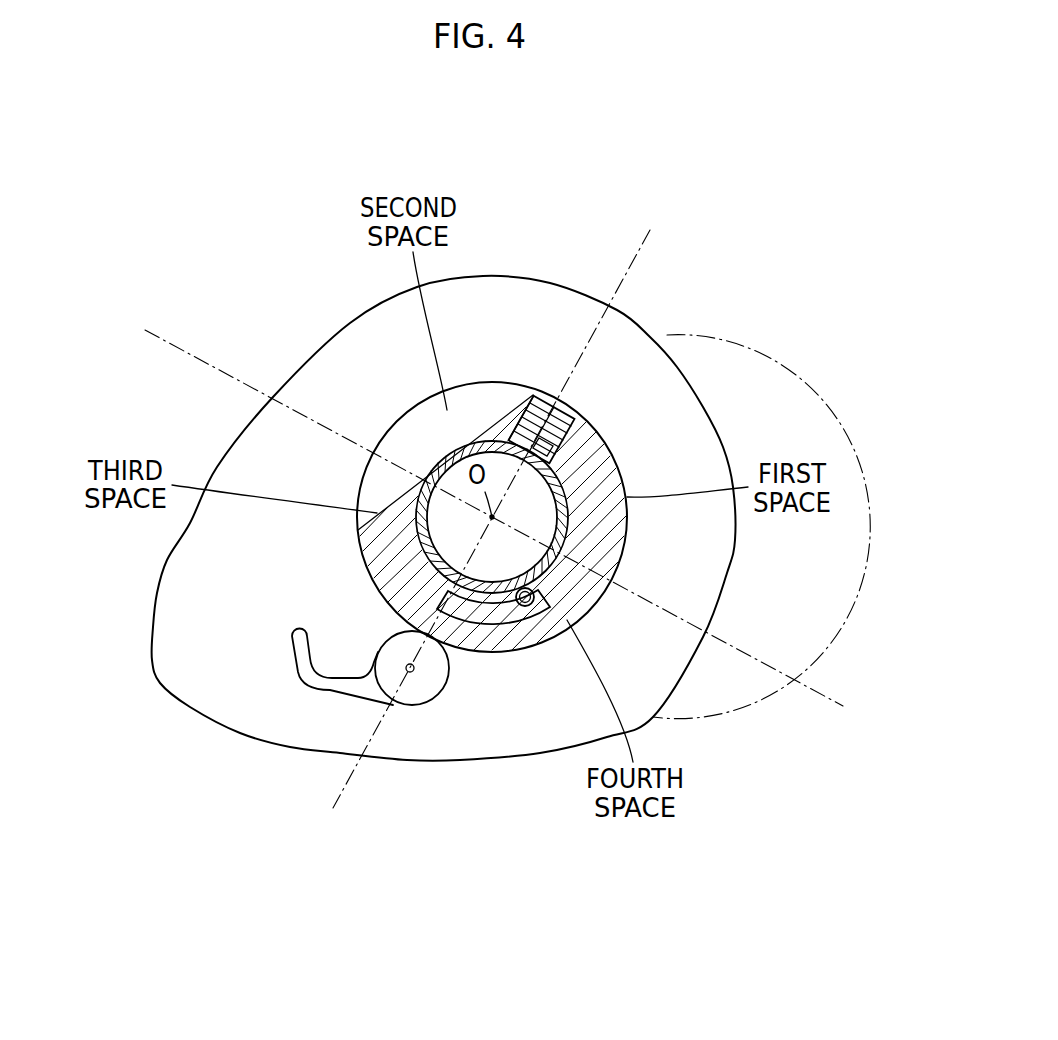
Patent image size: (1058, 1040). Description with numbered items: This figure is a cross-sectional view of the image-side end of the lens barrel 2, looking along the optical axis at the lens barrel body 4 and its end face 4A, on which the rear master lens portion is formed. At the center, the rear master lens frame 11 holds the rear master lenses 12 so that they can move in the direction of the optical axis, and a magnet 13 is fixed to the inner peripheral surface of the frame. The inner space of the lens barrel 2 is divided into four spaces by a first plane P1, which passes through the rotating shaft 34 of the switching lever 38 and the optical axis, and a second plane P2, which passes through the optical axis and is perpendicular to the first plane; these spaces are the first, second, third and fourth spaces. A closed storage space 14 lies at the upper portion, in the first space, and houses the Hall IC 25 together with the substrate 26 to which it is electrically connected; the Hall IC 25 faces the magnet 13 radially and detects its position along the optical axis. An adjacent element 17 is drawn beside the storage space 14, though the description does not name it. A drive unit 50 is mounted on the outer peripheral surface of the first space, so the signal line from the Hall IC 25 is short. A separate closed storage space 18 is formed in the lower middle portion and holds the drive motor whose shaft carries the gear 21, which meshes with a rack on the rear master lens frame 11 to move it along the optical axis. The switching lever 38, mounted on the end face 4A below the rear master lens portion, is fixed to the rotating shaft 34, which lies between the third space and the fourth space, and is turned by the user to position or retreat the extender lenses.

The lens barrel 2 is at (320, 343).
The lens barrel body 4 is at (561, 262).
The end face 4A is at (523, 318).
The rear master lens frame 11 is at (582, 472).
The rear master lenses 12 is at (535, 520).
The magnet 13 is at (541, 460).
The storage space 14 is at (541, 400).
The screw seat 17 is at (508, 400).
The storage space 18 is at (468, 632).
The gear 21 is at (535, 598).
The Hall IC 25 is at (568, 432).
The substrate 26 is at (574, 403).
The rotating shaft 34 is at (416, 703).
The switching lever 38 is at (338, 683).
The drive unit 50 is at (780, 403).
The first plane P1 is at (350, 787).
The second plane P2 is at (813, 690).